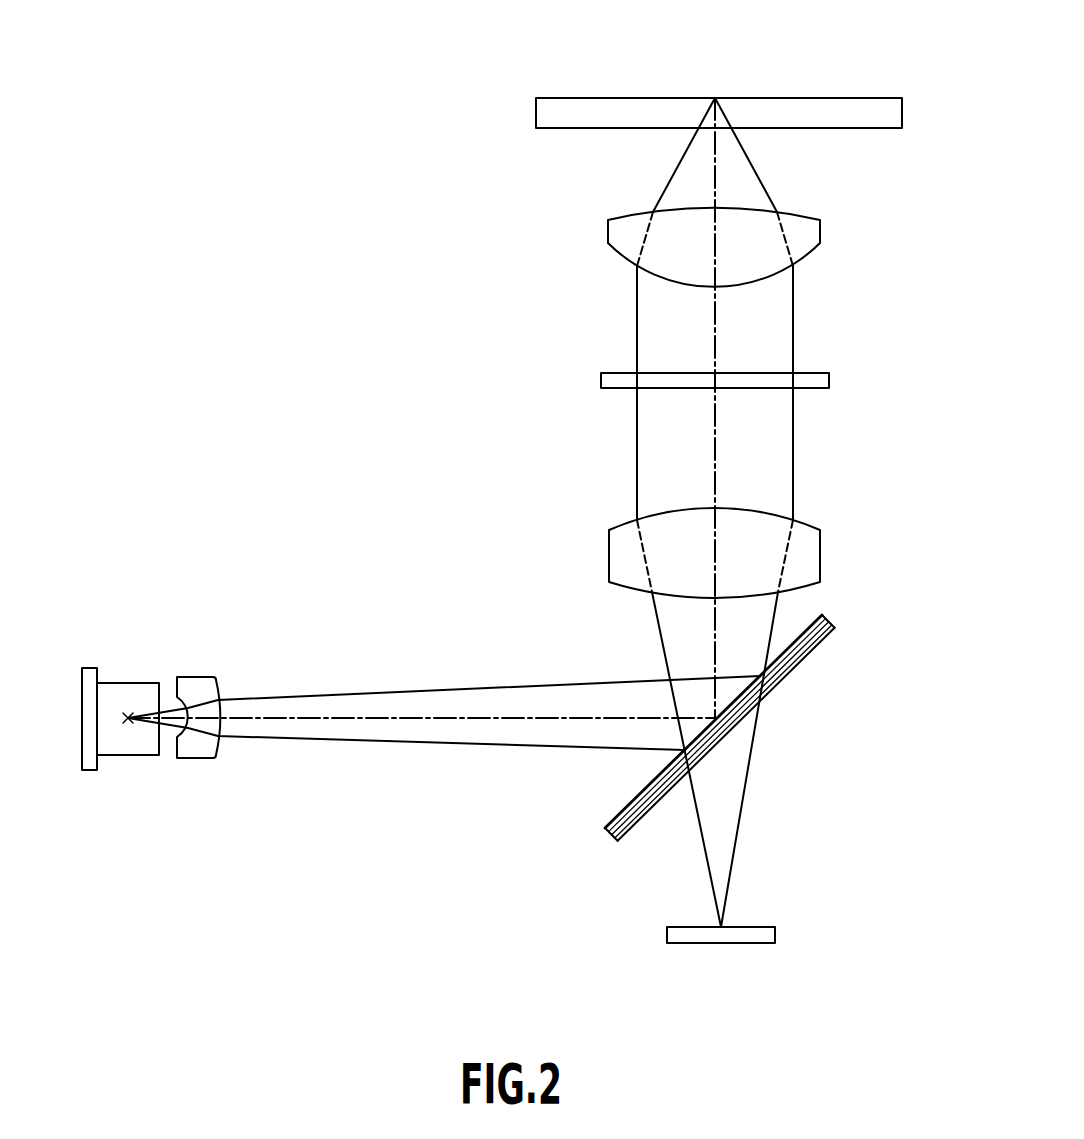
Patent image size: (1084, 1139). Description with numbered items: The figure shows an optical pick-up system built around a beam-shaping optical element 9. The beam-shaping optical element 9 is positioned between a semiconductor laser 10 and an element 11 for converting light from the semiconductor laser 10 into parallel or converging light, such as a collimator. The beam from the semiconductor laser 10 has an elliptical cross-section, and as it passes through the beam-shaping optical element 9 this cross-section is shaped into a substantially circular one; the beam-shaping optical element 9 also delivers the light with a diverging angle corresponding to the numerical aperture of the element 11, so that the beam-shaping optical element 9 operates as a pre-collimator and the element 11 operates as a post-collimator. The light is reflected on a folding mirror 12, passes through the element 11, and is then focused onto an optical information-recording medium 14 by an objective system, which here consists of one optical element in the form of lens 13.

The beam-shaping optical element 9 is at (188, 712).
The semiconductor laser 10 is at (128, 700).
The element for converting light into parallel or converging light 11 is at (797, 523).
The folding mirror 12 is at (760, 713).
The lens 13 is at (807, 237).
The optical information-recording medium 14 is at (813, 112).